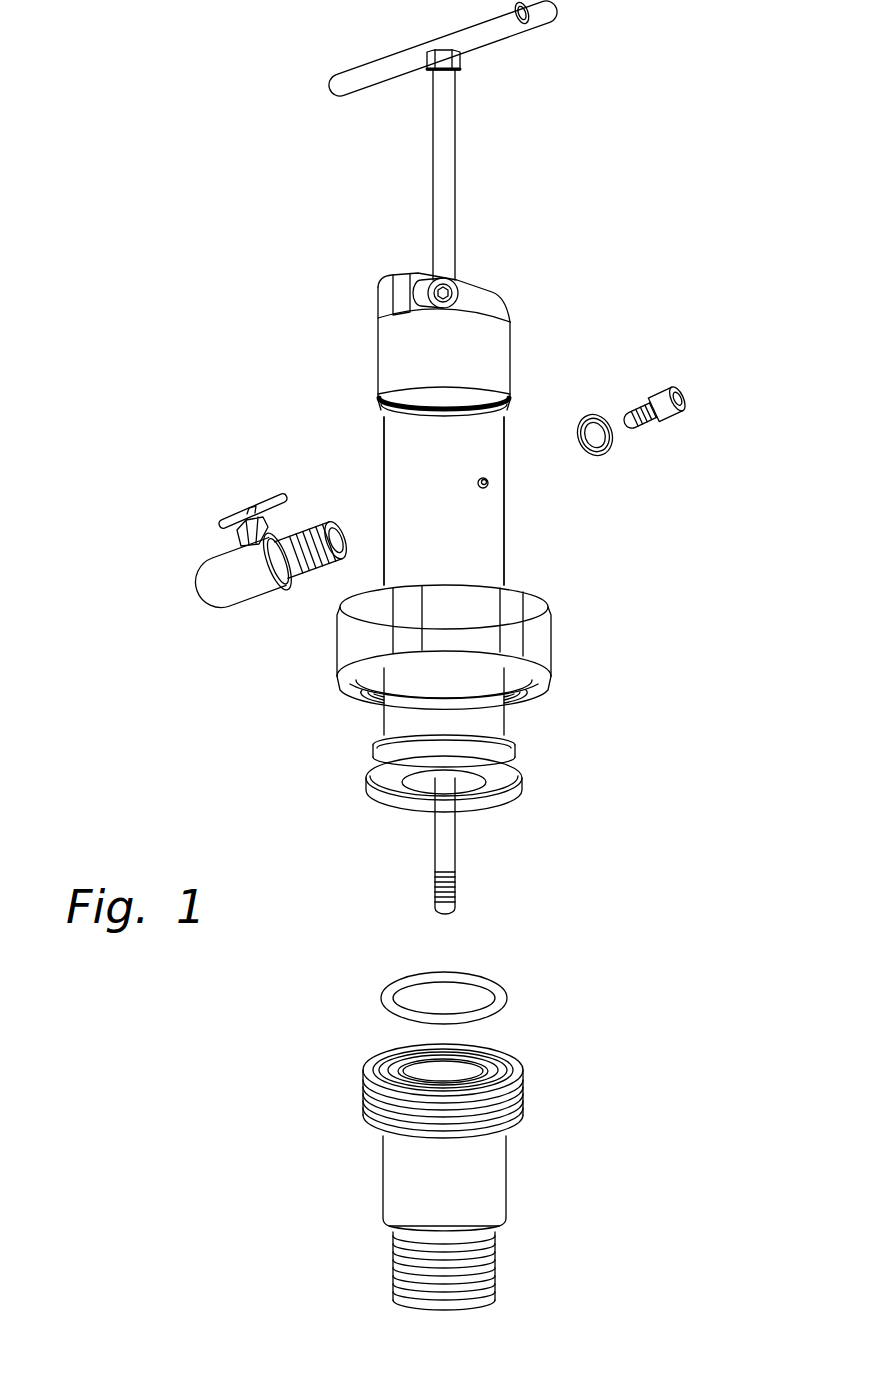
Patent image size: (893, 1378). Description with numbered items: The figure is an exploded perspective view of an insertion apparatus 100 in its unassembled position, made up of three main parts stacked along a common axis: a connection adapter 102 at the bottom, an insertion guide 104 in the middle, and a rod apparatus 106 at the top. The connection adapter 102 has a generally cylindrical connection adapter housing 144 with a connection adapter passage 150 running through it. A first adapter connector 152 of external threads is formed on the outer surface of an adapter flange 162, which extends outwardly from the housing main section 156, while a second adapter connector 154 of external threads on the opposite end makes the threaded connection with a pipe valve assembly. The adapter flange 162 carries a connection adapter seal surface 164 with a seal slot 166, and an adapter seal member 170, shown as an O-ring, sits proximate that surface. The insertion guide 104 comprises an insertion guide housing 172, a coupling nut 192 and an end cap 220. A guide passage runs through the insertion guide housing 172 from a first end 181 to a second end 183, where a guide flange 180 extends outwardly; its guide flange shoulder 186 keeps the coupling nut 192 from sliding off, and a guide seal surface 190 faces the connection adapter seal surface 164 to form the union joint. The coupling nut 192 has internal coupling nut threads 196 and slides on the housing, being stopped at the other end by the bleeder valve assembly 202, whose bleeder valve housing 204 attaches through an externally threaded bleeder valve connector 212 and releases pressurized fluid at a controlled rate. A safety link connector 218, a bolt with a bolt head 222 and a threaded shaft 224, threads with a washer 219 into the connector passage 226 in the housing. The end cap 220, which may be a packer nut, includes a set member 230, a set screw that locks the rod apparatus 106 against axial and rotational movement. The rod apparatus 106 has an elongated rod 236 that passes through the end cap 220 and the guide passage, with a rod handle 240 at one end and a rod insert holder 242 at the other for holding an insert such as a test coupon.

The insertion apparatus 100 is at (140, 165).
The connection adapter 102 is at (324, 1228).
The insertion guide 104 is at (320, 423).
The rod apparatus 106 is at (384, 189).
The connection adapter housing 144 is at (500, 1167).
The connection adapter passage 150 is at (448, 1073).
The first adapter connector 152 is at (368, 1086).
The second adapter connector 154 is at (497, 1262).
The housing main section 156 is at (508, 1198).
The adapter flange 162 is at (378, 1120).
The connection adapter seal surface 164 is at (516, 1070).
The seal slot 166 is at (384, 1068).
The adapter seal member 170 is at (508, 996).
The insertion guide housing 172 is at (507, 540).
The guide flange 180 is at (524, 768).
The first end 181 is at (433, 416).
The second end 183 is at (510, 818).
The guide flange shoulder 186 is at (371, 751).
The guide seal surface 190 is at (395, 792).
The coupling nut 192 is at (553, 645).
The coupling nut threads 196 is at (512, 692).
The bleeder valve assembly 202 is at (212, 561).
The bleeder valve housing 204 is at (210, 612).
The bleeder valve connector 212 is at (326, 518).
The safety link connector 218 is at (698, 402).
The washer 219 is at (606, 452).
The end cap 220 is at (512, 362).
The bolt head 222 is at (684, 384).
The threaded shaft 224 is at (645, 402).
The connector passage 226 is at (482, 490).
The set member 230 is at (447, 290).
The rod 236 is at (456, 160).
The rod handle 240 is at (360, 72).
The rod insert holder 242 is at (456, 891).